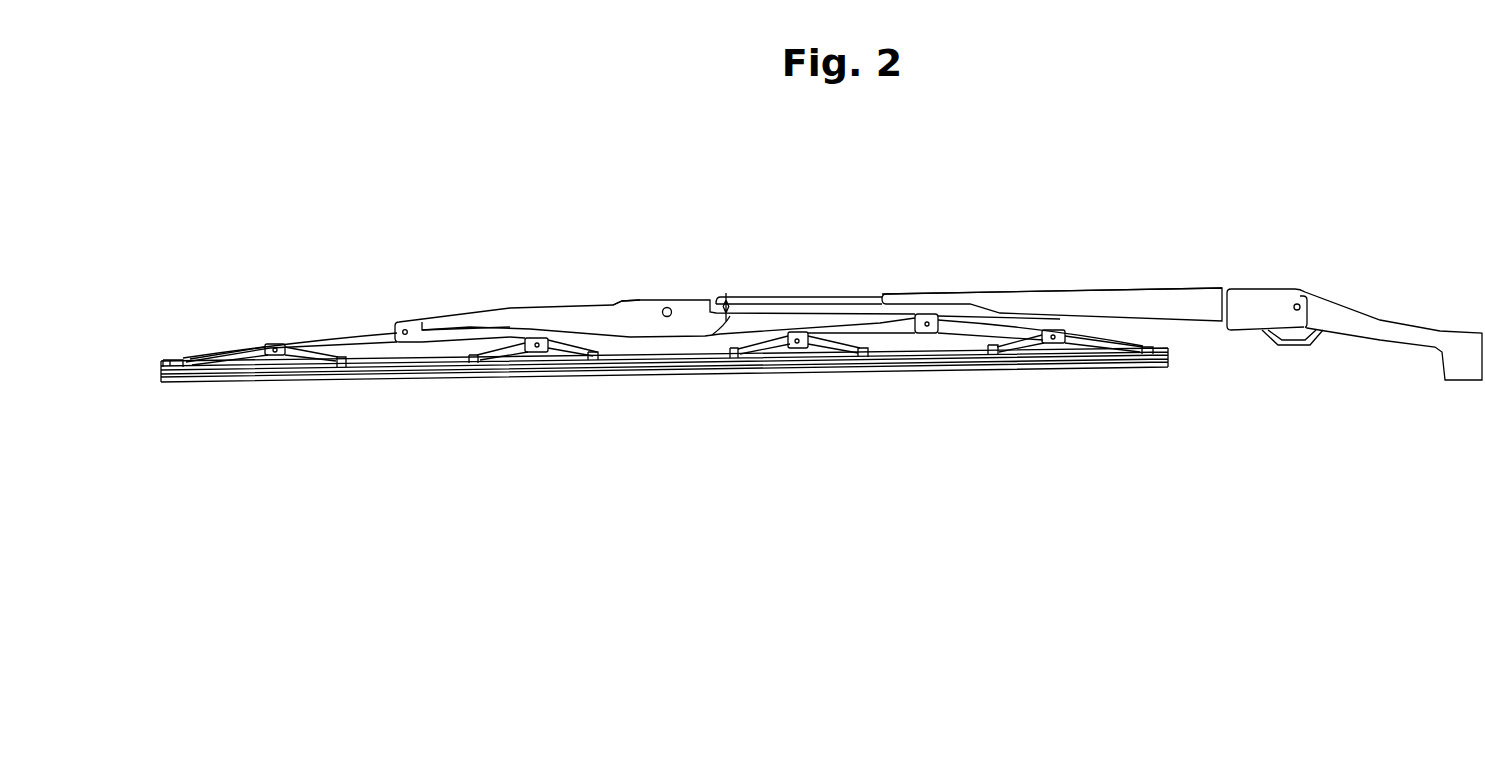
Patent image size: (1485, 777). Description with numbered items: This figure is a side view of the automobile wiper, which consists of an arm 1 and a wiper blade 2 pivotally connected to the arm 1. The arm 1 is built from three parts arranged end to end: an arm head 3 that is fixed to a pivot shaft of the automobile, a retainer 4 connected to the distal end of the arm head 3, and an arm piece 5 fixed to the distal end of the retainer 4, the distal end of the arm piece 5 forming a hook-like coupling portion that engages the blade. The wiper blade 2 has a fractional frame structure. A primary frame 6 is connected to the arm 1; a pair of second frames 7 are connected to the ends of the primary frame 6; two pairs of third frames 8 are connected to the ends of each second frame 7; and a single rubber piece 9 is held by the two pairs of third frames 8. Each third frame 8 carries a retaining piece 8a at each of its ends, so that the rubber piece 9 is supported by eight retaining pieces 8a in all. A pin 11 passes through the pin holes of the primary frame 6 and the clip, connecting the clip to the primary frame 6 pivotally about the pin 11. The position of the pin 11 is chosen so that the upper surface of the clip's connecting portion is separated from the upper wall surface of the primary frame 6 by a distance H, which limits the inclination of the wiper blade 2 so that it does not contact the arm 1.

The arm 1 is at (1123, 271).
The wiper blade 2 is at (512, 299).
The arm head 3 is at (1380, 322).
The retainer 4 is at (1184, 296).
The arm piece 5 is at (812, 297).
The primary frame 6 is at (584, 306).
The second frames 7 is at (358, 330).
The third frames 8 is at (236, 349).
The retaining piece 8a is at (172, 358).
The rubber piece 9 is at (232, 382).
The pin 11 is at (666, 308).
The distance H is at (733, 296).